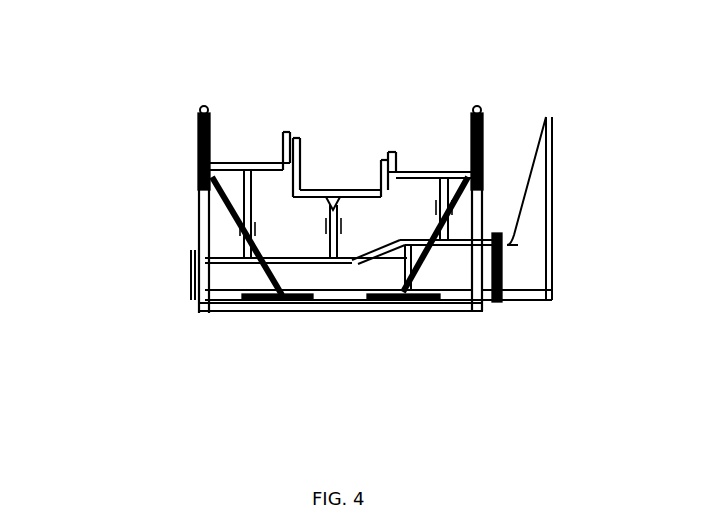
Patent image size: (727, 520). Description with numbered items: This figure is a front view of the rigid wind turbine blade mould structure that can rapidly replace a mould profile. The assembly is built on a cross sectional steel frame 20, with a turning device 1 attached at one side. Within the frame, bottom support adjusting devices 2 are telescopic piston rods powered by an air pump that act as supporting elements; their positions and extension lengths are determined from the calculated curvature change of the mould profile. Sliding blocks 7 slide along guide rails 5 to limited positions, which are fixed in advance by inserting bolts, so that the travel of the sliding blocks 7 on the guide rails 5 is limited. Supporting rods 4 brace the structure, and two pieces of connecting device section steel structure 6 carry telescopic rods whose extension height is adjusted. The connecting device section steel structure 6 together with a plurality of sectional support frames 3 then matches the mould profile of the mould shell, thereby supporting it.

The turning device 1 is at (535, 255).
The bottom support adjusting devices 2 is at (333, 232).
The sectional support frames 3 is at (401, 172).
The supporting rods 4 is at (262, 245).
The guide rails 5 is at (285, 300).
The connecting device section steel structure 6 is at (200, 215).
The sliding blocks 7 is at (280, 296).
The cross sectional steel frame 20 is at (302, 309).